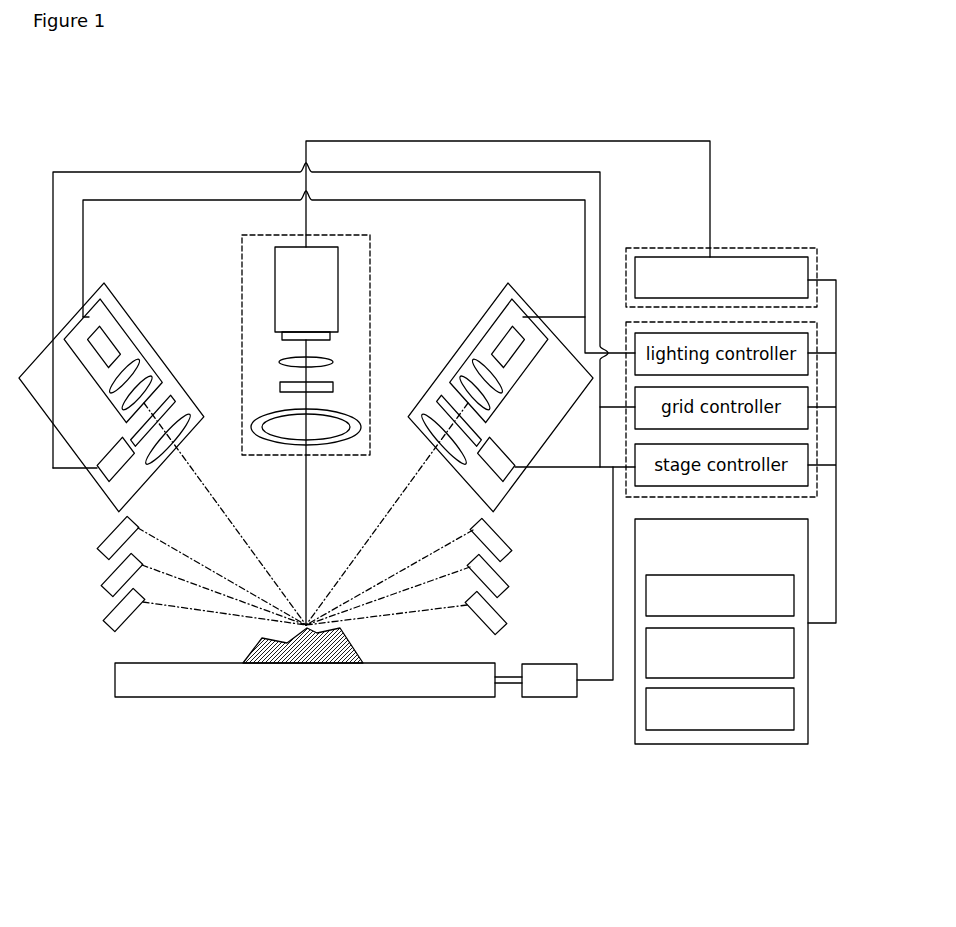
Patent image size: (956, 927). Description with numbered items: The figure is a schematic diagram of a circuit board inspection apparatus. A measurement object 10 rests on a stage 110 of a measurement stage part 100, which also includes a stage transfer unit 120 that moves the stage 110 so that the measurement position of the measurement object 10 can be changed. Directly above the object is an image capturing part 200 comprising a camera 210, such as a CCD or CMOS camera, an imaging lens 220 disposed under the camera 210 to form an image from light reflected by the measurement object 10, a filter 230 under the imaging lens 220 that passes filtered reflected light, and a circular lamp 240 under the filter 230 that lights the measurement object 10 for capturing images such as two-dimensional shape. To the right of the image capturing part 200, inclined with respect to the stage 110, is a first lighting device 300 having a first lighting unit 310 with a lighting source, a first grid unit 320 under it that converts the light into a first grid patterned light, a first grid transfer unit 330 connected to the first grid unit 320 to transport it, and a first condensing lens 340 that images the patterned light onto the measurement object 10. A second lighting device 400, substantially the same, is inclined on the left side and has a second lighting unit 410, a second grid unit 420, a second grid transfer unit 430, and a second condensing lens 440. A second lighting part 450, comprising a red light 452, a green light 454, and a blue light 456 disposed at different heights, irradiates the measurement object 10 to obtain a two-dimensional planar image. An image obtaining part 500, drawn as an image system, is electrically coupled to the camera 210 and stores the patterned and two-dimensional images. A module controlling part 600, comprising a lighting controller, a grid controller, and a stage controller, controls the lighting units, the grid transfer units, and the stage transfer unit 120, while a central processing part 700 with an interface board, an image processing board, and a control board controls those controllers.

The measurement object 10 is at (290, 667).
The measurement stage part 100 is at (346, 720).
The stage 110 is at (472, 682).
The stage transfer unit 120 is at (536, 705).
The image capturing part 200 is at (319, 370).
The camera 210 is at (277, 283).
The imaging lens 220 is at (328, 358).
The filter 230 is at (280, 382).
The circular lamp 240 is at (275, 445).
The first lighting device 300 is at (495, 385).
The first lighting unit 310 is at (500, 397).
The first grid unit 320 is at (481, 385).
The first grid transfer unit 330 is at (496, 459).
The first condensing lens 340 is at (450, 430).
The second lighting device 400 is at (112, 401).
The second lighting unit 410 is at (111, 397).
The second grid unit 420 is at (137, 400).
The second grid transfer unit 430 is at (115, 459).
The second condensing lens 440 is at (167, 439).
The second lighting part 450 is at (308, 589).
The red light 452 is at (511, 552).
The green light 454 is at (508, 590).
The blue light 456 is at (306, 624).
The image obtaining part 500 is at (663, 248).
The module controlling part 600 is at (612, 485).
The central processing part 700 is at (665, 745).